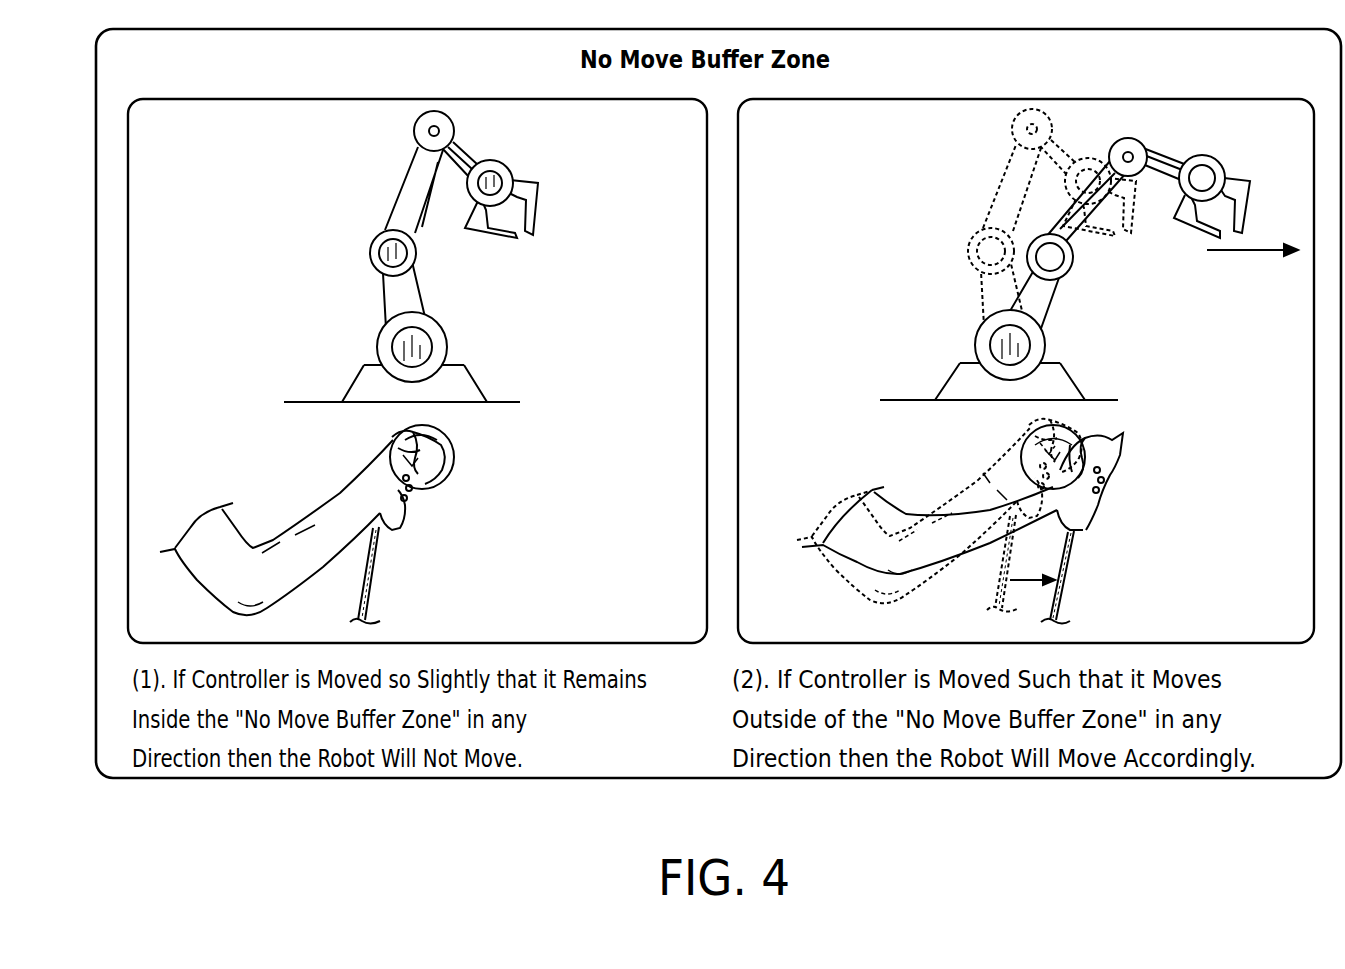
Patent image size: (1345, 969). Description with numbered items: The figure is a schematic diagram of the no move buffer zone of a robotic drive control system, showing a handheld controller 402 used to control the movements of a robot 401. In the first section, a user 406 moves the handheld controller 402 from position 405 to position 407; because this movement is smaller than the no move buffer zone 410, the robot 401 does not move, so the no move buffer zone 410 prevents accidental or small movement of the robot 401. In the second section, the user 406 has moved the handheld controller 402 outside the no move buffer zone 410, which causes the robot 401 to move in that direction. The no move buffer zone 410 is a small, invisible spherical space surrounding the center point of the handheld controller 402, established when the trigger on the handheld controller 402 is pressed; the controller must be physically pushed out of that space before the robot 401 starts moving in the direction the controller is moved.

The robot 401 is at (361, 178).
The handheld controller 402 is at (403, 532).
The position 405 is at (438, 443).
The user 406 is at (207, 585).
The position 407 is at (450, 460).
The no move buffer zone 410 is at (440, 493).